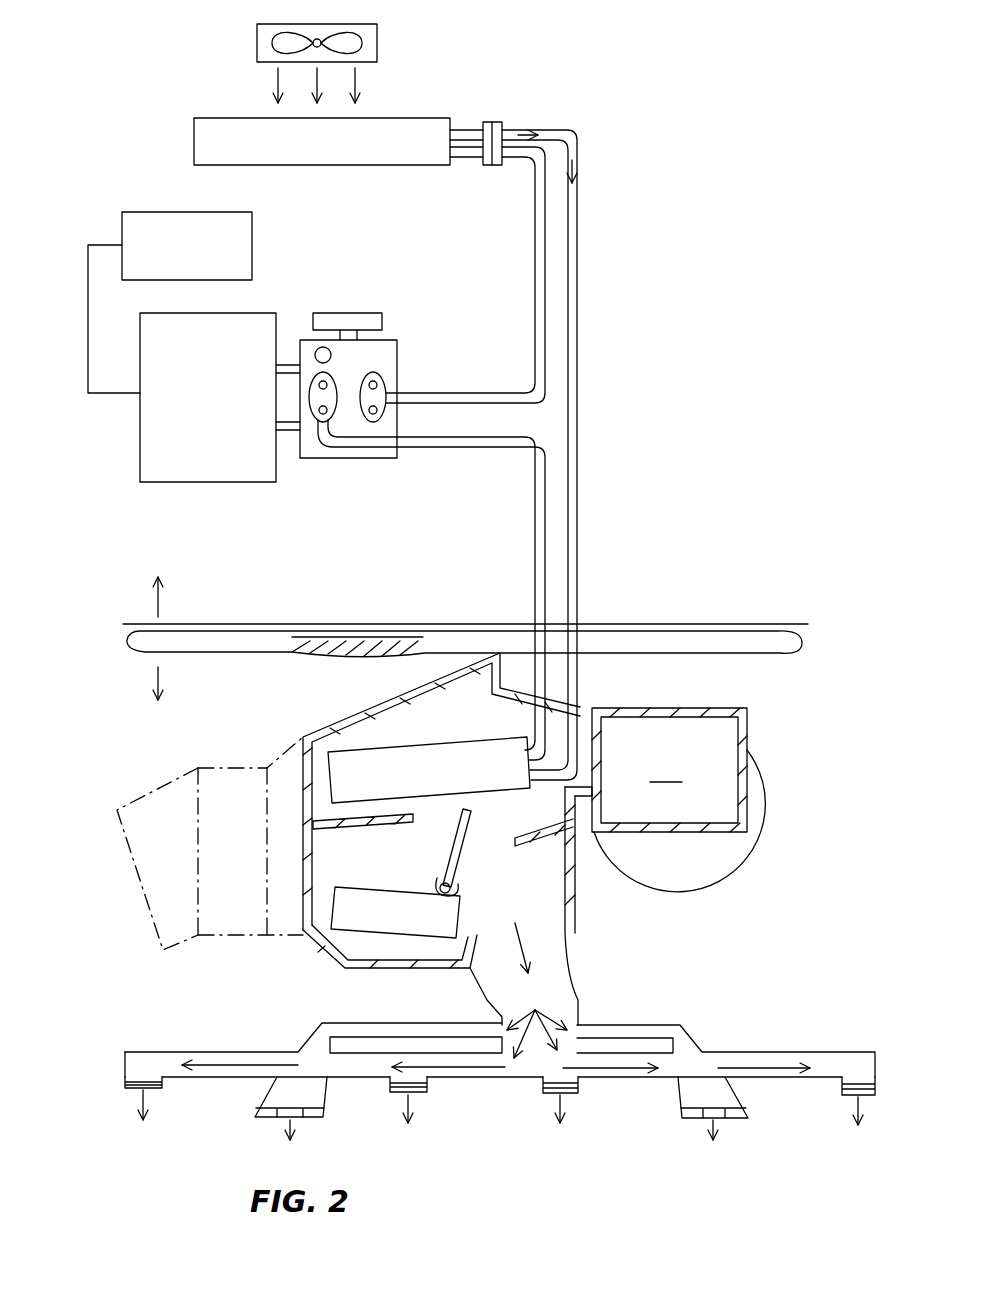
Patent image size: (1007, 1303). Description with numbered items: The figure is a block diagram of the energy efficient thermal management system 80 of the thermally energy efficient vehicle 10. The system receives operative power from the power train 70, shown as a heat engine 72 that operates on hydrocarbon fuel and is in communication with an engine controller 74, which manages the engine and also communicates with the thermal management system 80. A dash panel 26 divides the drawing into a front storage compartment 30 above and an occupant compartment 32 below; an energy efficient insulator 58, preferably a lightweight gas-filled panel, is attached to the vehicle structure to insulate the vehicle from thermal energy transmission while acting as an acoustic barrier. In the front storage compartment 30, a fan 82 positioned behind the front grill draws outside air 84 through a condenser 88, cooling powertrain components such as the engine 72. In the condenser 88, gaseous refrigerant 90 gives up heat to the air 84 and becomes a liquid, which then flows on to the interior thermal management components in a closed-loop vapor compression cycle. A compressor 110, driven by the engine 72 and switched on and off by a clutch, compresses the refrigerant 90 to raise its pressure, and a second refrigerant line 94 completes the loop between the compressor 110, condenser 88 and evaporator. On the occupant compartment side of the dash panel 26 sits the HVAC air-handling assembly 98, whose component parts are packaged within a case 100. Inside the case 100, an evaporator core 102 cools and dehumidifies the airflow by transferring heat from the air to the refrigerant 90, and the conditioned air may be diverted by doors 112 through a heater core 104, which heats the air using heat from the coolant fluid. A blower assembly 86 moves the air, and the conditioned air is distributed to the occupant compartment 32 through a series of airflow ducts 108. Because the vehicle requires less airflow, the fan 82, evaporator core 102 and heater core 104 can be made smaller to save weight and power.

The thermally energy efficient vehicle 10 is at (707, 213).
The dash panel 26 is at (655, 626).
The front storage compartment 30 is at (766, 355).
The occupant compartment 32 is at (788, 1185).
The energy efficient insulator 58 is at (788, 648).
The power train 70 is at (178, 378).
The heat engine 72 is at (253, 482).
The engine controller 74 is at (252, 237).
The energy efficient thermal management system 80 is at (334, 89).
The fan 82 is at (377, 40).
The air 84 is at (357, 84).
The blower assembly 86 is at (669, 770).
The condenser 88 is at (194, 125).
The refrigerant 90 is at (576, 135).
The refrigerant line 94 is at (533, 235).
The HVAC air-handling assembly 98 is at (732, 800).
The case 100 is at (370, 716).
The evaporator core 102 is at (433, 748).
The heater core 104 is at (373, 887).
The airflow ducts 108 is at (752, 1050).
The compressor 110 is at (398, 357).
The doors 112 is at (356, 313).